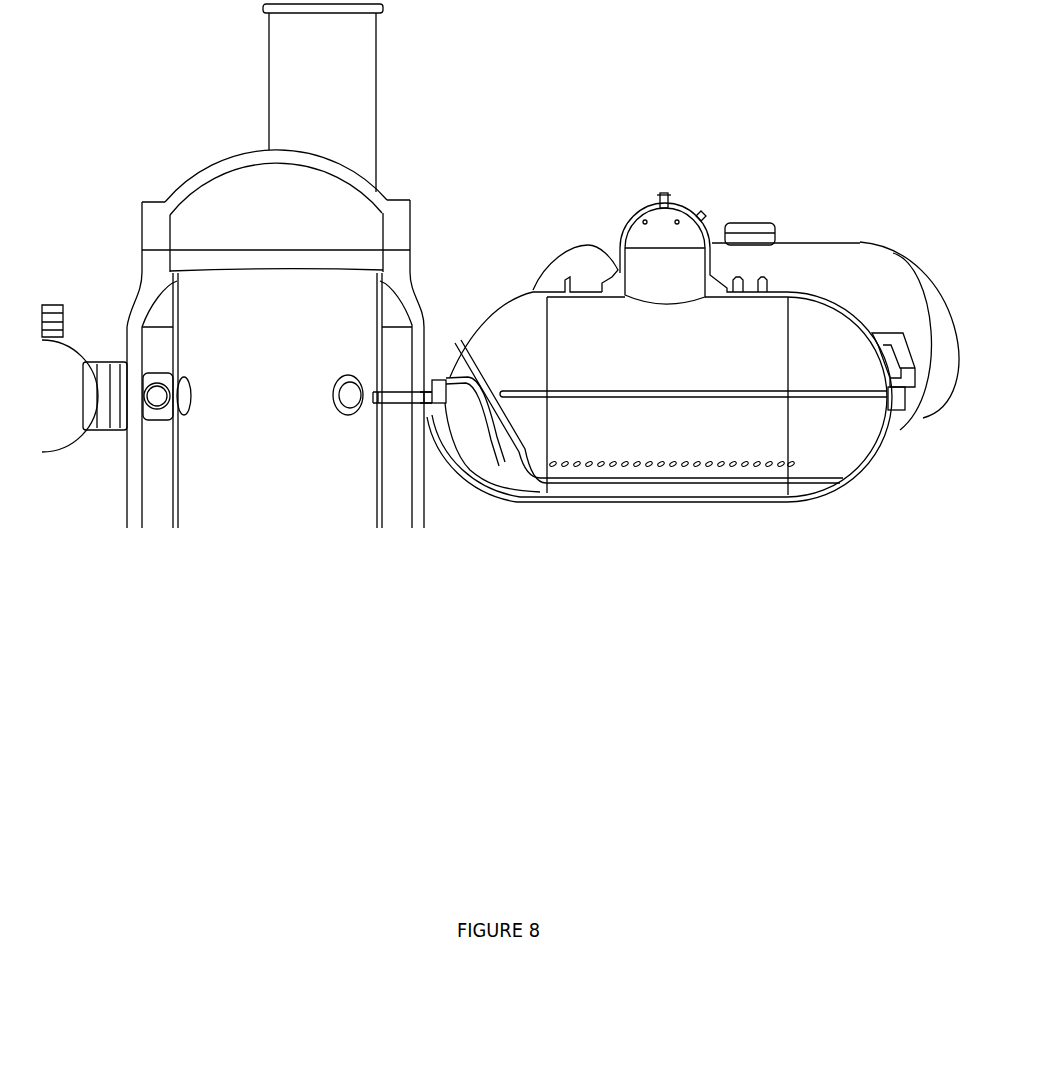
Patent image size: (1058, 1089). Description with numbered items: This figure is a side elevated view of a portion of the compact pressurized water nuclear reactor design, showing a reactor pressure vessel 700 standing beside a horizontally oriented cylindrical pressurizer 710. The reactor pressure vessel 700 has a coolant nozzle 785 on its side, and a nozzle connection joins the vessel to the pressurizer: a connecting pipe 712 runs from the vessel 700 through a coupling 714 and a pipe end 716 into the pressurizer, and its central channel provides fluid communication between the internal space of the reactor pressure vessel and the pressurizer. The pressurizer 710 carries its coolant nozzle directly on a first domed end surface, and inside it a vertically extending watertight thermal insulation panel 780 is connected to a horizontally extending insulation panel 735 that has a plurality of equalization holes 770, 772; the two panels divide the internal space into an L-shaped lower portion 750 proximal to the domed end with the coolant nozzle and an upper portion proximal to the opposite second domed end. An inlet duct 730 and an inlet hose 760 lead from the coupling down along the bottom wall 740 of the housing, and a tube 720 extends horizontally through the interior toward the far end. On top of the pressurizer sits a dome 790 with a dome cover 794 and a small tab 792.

The fluid treatment device 700 is at (417, 505).
The outlet port 785 is at (323, 413).
The connecting pipe 712 is at (422, 383).
The coupling 714 is at (438, 388).
The pipe end 716 is at (427, 398).
The housing 710 is at (823, 298).
The tube 720 is at (807, 395).
The inlet duct wall 730 is at (517, 445).
The floor plate 735 is at (602, 482).
The bottom wall 740 is at (653, 492).
The chamber 750 is at (742, 440).
The inlet hose 760 is at (493, 425).
The perforations 770 is at (722, 465).
The perforated plate 772 is at (660, 467).
The interior compartment 780 is at (750, 335).
The dome 790 is at (667, 192).
The tab 792 is at (700, 216).
The dome cover 794 is at (638, 210).